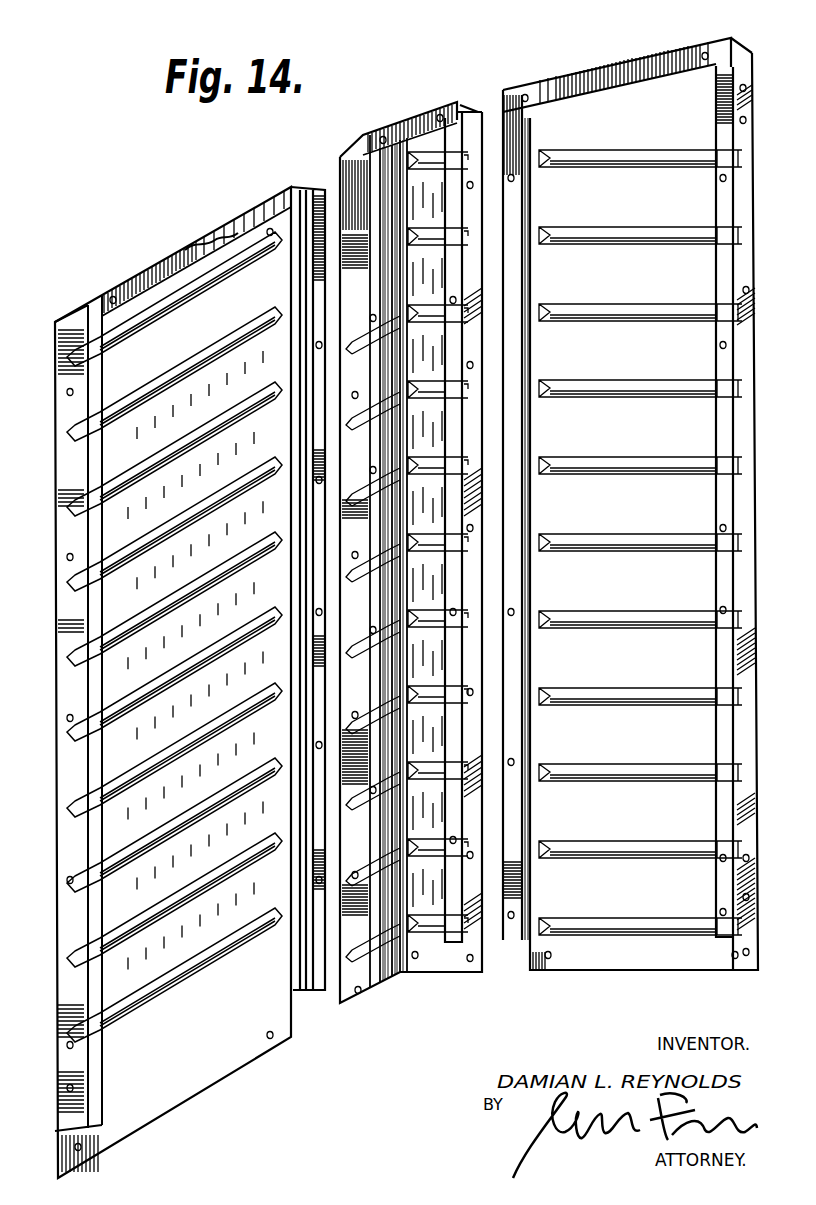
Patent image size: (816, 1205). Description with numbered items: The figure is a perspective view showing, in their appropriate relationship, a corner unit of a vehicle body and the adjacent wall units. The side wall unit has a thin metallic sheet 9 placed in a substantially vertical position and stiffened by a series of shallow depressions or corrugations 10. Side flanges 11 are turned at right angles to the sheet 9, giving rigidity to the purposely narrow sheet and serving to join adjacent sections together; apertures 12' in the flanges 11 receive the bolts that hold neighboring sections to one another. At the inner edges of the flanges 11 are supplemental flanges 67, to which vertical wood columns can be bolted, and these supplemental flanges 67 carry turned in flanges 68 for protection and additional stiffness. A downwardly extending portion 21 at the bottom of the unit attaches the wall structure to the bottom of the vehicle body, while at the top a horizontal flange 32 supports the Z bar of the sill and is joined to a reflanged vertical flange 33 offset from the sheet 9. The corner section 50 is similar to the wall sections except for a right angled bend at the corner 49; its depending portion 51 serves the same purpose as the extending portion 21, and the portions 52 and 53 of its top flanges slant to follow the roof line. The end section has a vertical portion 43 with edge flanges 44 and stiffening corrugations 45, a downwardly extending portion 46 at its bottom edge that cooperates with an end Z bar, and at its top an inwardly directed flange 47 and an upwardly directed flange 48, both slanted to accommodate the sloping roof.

The thin metallic sheet 9 is at (140, 330).
The depressions or corrugations 10 is at (184, 445).
The side flanges 11 is at (298, 187).
The apertures 12' is at (55, 751).
The downwardly extending portion 21 is at (196, 1078).
The horizontal flanges 32 is at (232, 238).
The reflanged vertical portion or flange 33 is at (160, 268).
The supplemental flanges 67 is at (307, 347).
The turned in flanges 68 is at (307, 450).
The corner 49 is at (395, 277).
The corner section 50 is at (449, 118).
The depending portion 51 is at (386, 990).
The slanting top flange portion 52 is at (470, 112).
The slanting top flange portion 53 is at (432, 93).
The vertical portion 43 is at (613, 127).
The edge flanges 44 is at (742, 205).
The indentations or corrugations 45 is at (662, 300).
The downwardly extending portion 46 is at (637, 960).
The inwardly directed flange 47 is at (738, 55).
The upwardly directed flange 48 is at (683, 55).